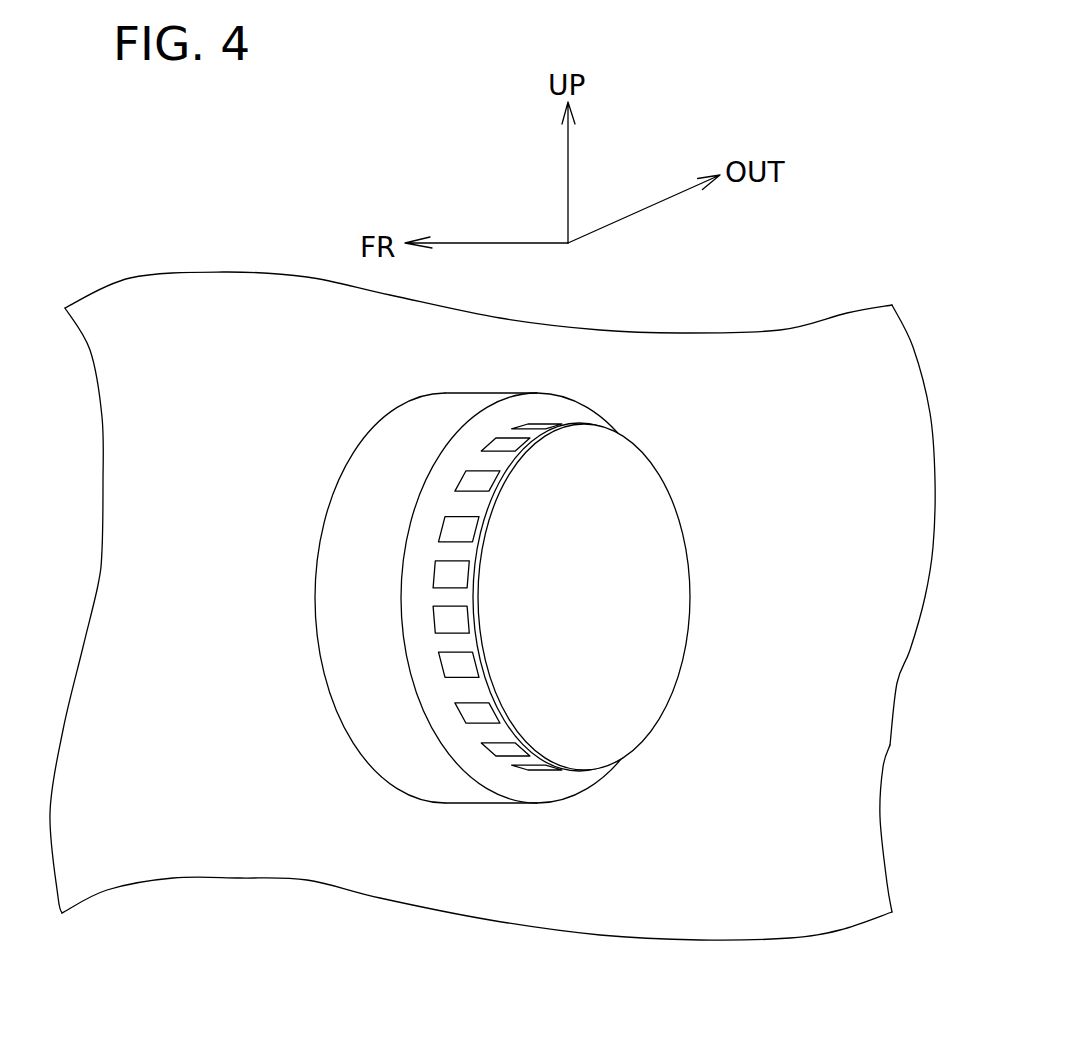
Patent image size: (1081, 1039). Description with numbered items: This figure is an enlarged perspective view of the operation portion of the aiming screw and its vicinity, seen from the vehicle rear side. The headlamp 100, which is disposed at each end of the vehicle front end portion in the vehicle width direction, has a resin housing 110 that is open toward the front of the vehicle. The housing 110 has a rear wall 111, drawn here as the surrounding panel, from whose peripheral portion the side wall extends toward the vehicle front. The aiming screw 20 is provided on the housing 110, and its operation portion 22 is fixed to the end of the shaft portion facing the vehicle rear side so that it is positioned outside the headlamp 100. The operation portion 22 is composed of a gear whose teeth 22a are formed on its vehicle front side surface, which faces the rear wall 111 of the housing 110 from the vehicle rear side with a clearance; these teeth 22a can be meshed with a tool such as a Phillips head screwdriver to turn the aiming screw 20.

The aiming screw 20 is at (520, 598).
The operation portion 22 is at (647, 632).
The teeth 22a is at (455, 527).
The headlamp 100 is at (555, 606).
The housing 110 is at (887, 692).
The rear wall 111 is at (860, 797).